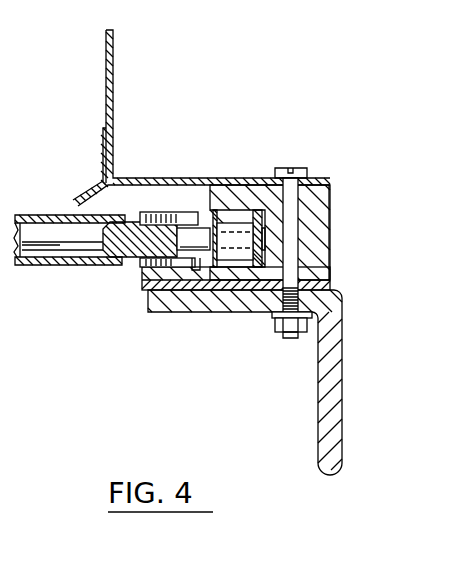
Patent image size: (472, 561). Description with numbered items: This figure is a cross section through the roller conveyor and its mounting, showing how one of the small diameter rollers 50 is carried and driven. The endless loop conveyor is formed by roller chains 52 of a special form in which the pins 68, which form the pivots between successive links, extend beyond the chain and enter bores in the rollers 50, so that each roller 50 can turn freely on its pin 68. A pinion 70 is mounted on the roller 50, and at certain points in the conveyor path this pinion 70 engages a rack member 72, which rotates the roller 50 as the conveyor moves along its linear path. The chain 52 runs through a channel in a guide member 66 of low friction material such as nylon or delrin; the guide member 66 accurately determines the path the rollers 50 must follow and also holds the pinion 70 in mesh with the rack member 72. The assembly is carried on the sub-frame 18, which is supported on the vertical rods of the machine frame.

The sub-frame 18 is at (345, 352).
The roller 50 is at (50, 265).
The roller chain 52 is at (229, 230).
The guide member 66 is at (323, 238).
The pin 68 is at (185, 244).
The pinion 70 is at (165, 218).
The rack member 72 is at (140, 270).